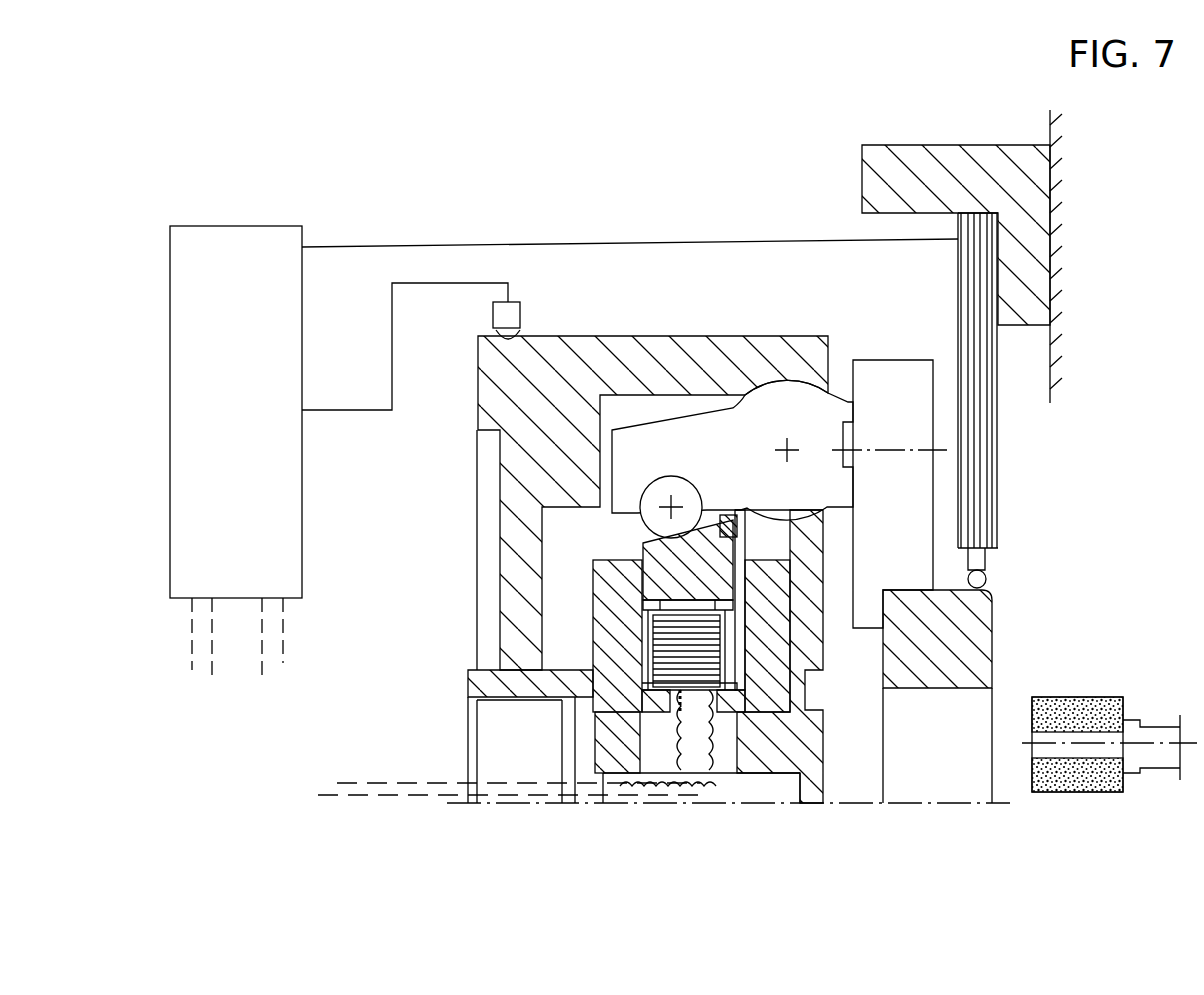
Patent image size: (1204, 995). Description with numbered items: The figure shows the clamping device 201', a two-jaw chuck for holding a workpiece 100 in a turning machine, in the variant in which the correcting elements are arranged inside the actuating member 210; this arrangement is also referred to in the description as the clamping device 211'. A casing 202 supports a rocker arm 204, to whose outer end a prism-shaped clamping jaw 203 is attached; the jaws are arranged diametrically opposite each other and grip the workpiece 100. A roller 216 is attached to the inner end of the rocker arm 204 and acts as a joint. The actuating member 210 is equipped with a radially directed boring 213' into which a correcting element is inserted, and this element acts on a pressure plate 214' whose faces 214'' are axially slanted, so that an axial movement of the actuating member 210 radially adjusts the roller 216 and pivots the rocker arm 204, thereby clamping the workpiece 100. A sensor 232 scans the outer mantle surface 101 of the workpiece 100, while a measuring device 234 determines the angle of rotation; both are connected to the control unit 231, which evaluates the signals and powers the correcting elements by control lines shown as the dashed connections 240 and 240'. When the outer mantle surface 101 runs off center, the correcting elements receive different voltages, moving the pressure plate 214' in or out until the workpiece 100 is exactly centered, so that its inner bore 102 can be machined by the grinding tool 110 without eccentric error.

The control unit 231 is at (238, 222).
The measuring device 234 is at (523, 281).
The clamping device 201' is at (648, 167).
The casing 202 is at (583, 332).
The rocker arm 204 is at (694, 414).
The faces of the pressure plate 214'' is at (754, 346).
The clamping jaw 203 is at (901, 357).
The roller 216 is at (658, 493).
The pressure plate 214' is at (564, 552).
The actuating member 210 is at (588, 595).
The clamping device 211' is at (679, 754).
The radially directed boring 213' is at (629, 793).
The sensor 232 is at (1004, 472).
The outer mantle surface 101 is at (955, 582).
The workpiece 100 is at (968, 660).
The inner bore 102 is at (927, 694).
The grinding tool 110 is at (1085, 780).
The cable 240 is at (489, 696).
The cable leads 240' is at (234, 665).